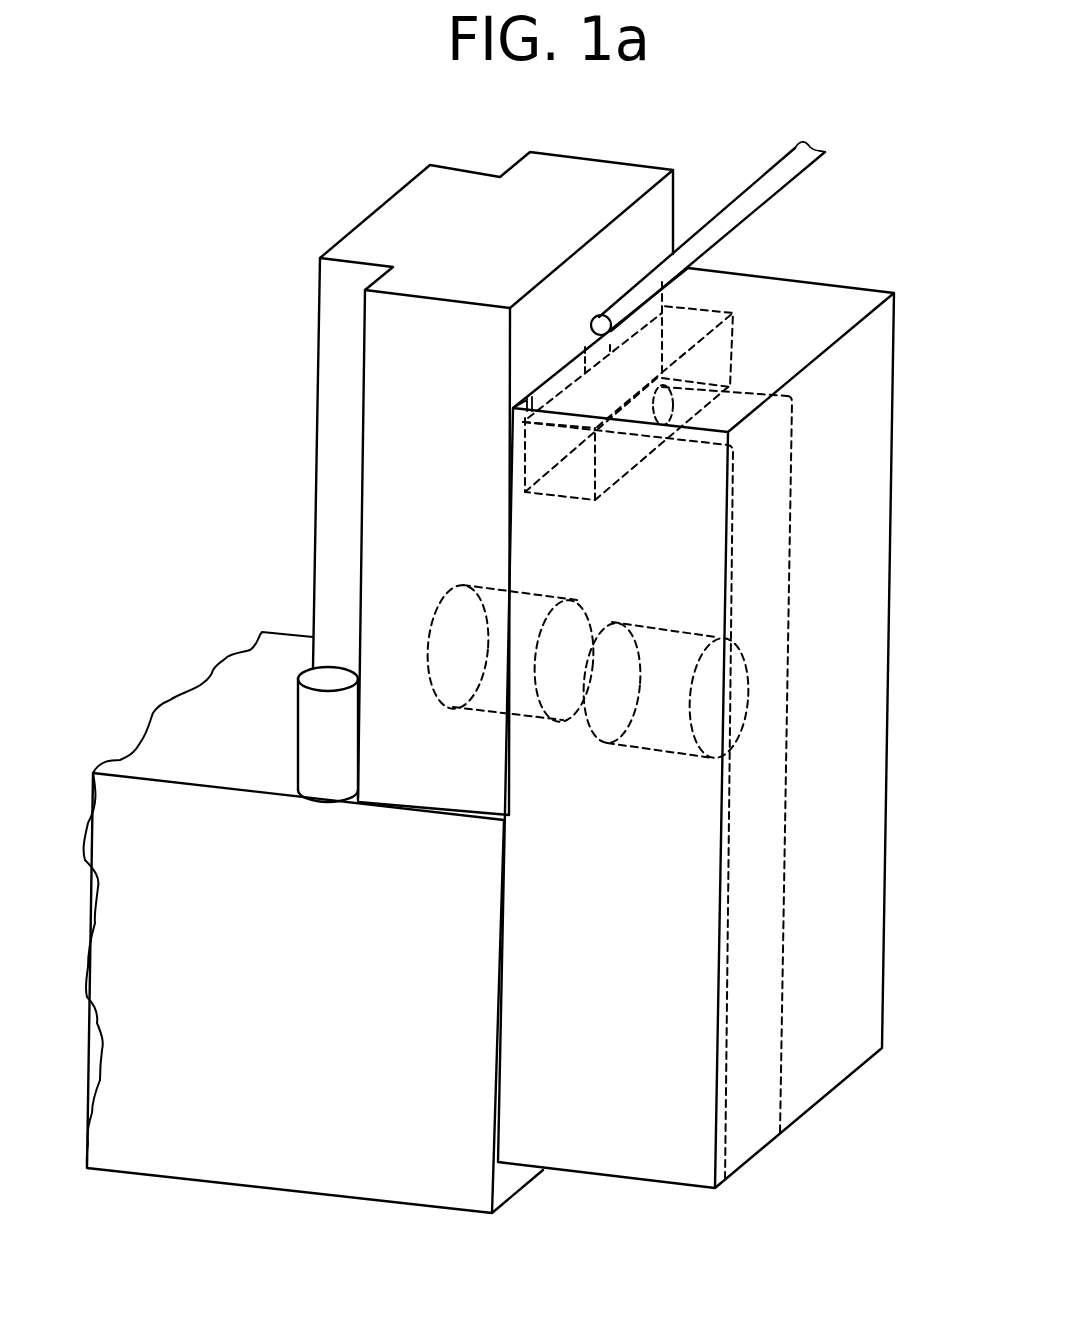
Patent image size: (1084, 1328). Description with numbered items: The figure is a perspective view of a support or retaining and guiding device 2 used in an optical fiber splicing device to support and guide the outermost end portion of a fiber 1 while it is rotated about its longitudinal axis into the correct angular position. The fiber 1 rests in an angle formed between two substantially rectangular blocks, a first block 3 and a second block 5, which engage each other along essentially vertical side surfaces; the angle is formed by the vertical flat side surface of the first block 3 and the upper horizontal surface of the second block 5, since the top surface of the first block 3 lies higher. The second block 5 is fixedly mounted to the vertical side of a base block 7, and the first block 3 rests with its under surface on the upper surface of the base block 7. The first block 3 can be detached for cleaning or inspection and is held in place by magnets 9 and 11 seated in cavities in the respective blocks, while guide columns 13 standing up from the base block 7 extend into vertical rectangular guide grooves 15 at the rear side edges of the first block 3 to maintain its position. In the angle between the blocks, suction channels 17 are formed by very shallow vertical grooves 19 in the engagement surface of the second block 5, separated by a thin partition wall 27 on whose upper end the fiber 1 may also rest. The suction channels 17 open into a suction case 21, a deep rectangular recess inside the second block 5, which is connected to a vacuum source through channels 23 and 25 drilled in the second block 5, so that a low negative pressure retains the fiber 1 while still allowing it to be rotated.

The fiber 1 is at (740, 208).
The support or retaining and guiding device 2 is at (873, 227).
The first block 3 is at (583, 172).
The second block 5 is at (883, 338).
The base block 7 is at (442, 1185).
The magnet 9 is at (490, 585).
The magnet 11 is at (650, 640).
The guide column 13 is at (335, 747).
The guide groove 15 is at (330, 497).
The suction channel 17 is at (545, 352).
The groove 19 is at (537, 395).
The suction case 21 is at (738, 340).
The channel 23 is at (743, 397).
The channel 25 is at (775, 530).
The wall 27 is at (607, 348).